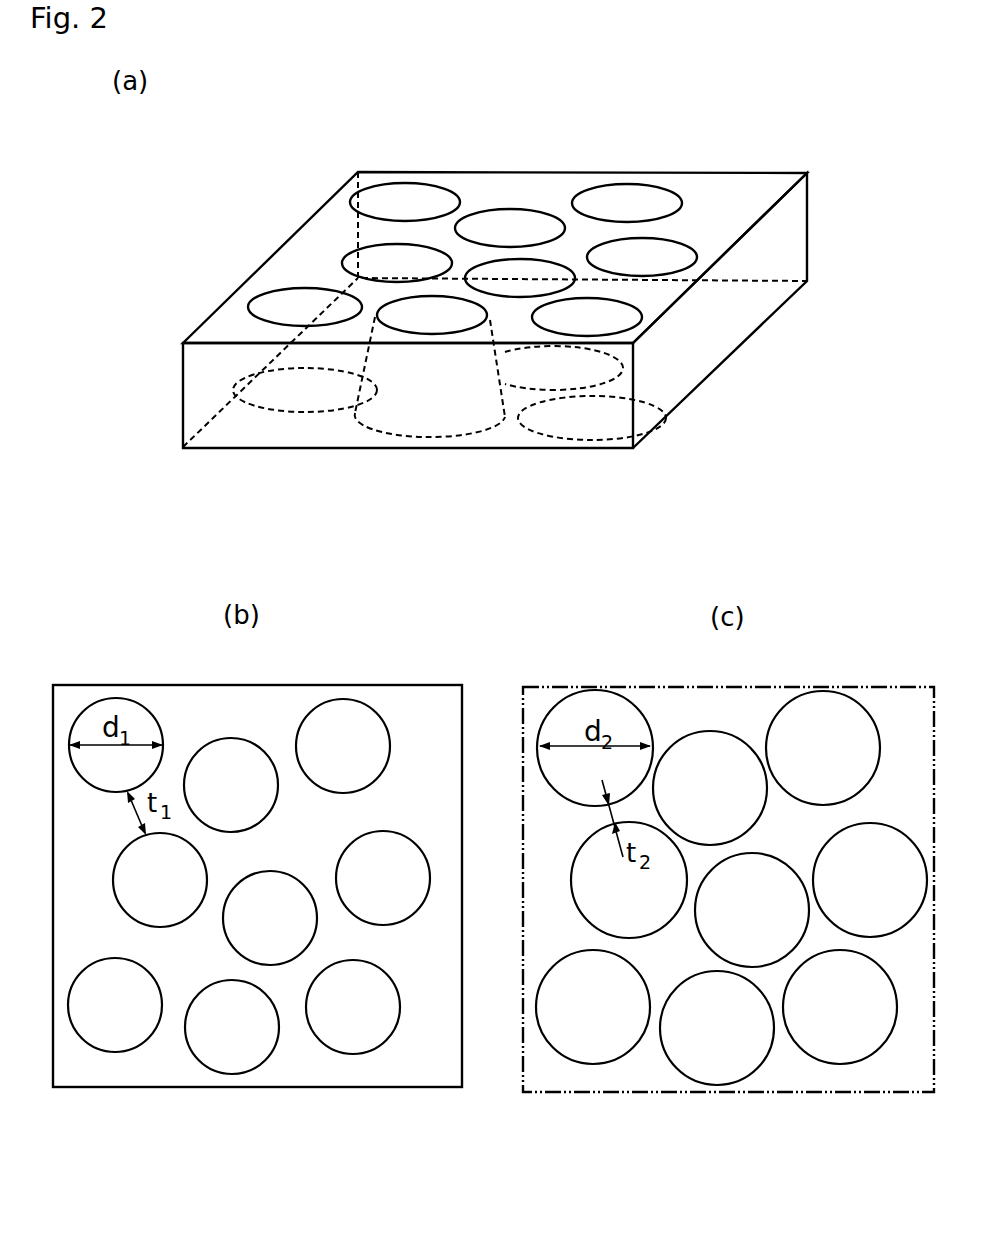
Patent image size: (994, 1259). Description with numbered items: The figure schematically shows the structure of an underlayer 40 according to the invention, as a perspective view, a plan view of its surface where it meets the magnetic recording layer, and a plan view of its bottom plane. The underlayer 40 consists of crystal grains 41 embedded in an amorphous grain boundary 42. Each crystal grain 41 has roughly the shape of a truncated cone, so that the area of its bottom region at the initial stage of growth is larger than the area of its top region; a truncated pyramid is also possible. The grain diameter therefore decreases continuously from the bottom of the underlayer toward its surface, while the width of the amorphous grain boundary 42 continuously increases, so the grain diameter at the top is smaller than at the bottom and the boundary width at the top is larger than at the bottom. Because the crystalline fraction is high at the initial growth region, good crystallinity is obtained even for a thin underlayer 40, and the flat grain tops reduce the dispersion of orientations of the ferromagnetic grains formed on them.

The underlayer 40 is at (612, 151).
The crystal grain 41 is at (415, 187).
The amorphous grain boundary 42 is at (303, 248).